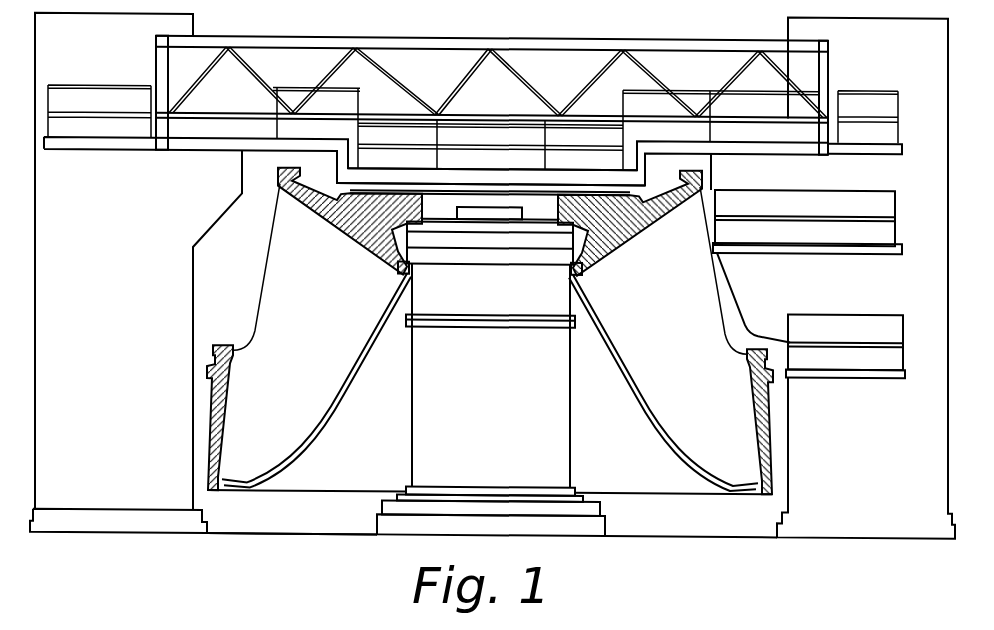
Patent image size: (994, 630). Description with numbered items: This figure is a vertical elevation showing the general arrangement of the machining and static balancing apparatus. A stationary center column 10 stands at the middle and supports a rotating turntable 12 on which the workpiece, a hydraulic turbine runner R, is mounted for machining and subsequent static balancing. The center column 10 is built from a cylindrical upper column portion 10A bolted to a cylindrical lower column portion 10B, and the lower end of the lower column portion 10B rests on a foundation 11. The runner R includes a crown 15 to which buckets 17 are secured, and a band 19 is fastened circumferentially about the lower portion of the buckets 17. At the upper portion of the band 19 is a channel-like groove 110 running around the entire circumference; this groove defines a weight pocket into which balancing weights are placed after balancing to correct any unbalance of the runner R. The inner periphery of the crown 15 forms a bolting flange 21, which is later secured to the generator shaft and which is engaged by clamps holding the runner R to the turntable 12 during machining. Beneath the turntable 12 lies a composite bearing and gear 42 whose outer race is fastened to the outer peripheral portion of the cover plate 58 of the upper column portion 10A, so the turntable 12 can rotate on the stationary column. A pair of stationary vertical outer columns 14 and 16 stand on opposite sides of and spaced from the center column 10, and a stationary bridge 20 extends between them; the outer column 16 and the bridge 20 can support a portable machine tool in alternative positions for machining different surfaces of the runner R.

The center column 10 is at (584, 412).
The upper column portion 10A is at (560, 288).
The lower column portion 10B is at (557, 448).
The foundation 11 is at (606, 522).
The turntable 12 is at (437, 220).
The outer column 14 is at (145, 302).
The crown 15 is at (360, 222).
The outer column 16 is at (898, 422).
The buckets 17 is at (343, 372).
The band 19 is at (212, 425).
The bridge 20 is at (563, 38).
The bolting flange 21 is at (568, 203).
The composite bearing and gear 42 is at (589, 242).
The cover plate 58 is at (398, 263).
The channel-like groove 110 is at (763, 354).
The runner R is at (261, 257).